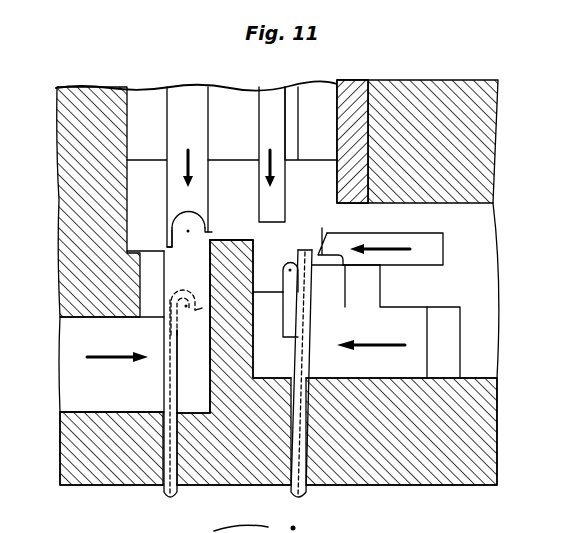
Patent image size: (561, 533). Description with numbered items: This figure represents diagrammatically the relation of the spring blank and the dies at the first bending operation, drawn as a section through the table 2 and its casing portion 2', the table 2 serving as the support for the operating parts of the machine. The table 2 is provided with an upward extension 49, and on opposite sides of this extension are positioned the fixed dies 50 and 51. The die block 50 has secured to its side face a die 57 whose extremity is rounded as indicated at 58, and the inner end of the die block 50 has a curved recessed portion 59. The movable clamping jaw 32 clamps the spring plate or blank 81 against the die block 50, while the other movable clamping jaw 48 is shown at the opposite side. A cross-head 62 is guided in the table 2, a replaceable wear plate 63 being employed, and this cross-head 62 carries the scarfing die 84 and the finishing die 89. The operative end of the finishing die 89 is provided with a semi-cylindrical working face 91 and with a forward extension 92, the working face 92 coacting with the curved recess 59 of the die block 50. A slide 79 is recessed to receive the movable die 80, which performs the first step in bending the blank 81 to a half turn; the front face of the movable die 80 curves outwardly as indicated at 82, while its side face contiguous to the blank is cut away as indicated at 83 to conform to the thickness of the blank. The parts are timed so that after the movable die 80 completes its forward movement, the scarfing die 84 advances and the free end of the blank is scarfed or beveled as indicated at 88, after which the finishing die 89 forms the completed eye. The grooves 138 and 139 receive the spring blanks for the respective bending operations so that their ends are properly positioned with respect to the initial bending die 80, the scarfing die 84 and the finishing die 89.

The table 2 is at (276, 258).
The casing section 2' is at (278, 375).
The movable clamping jaw 32 is at (111, 364).
The movable clamping jaw 48 is at (382, 342).
The upward extension 49 is at (230, 240).
The fixed die 50 is at (185, 385).
The fixed die 51 is at (268, 328).
The die 57 is at (292, 317).
The rounded extremity 58 is at (292, 263).
The curved recessed portion 59 is at (201, 310).
The cross-head 62 is at (311, 123).
The replaceable wear plate 63 is at (348, 88).
The slide 79 is at (424, 321).
The movable die 80 is at (377, 249).
The spring plate or blank 81 is at (305, 248).
The outwardly curved front face 82 is at (335, 233).
The cut-away side face 83 is at (341, 256).
The scarfing die 84 is at (262, 190).
The scarfed or beveled end 88 is at (195, 292).
The finishing die 89 is at (167, 169).
The semi-cylindrical working face 91 is at (180, 215).
The forward extension 92 is at (169, 245).
The groove 138 is at (163, 486).
The groove 139 is at (292, 484).